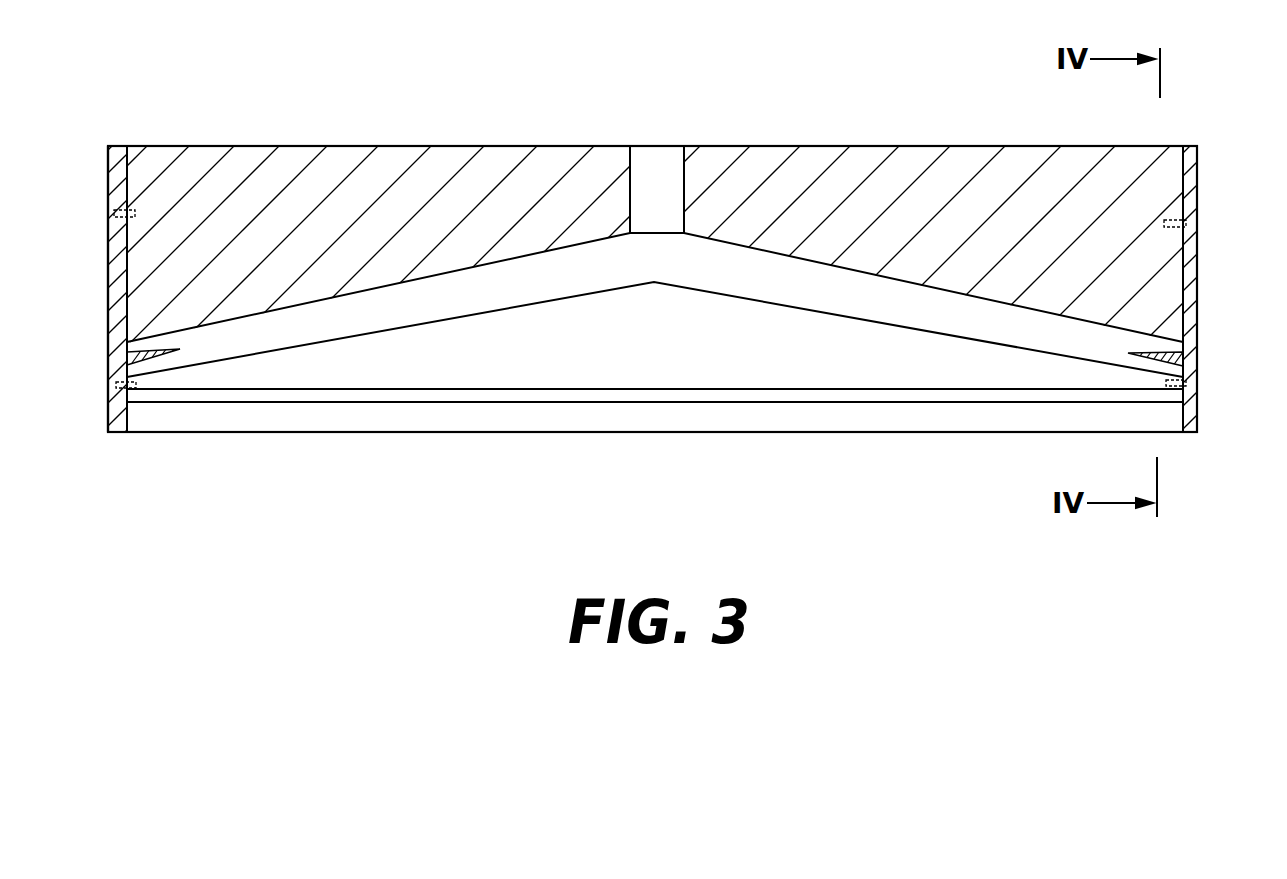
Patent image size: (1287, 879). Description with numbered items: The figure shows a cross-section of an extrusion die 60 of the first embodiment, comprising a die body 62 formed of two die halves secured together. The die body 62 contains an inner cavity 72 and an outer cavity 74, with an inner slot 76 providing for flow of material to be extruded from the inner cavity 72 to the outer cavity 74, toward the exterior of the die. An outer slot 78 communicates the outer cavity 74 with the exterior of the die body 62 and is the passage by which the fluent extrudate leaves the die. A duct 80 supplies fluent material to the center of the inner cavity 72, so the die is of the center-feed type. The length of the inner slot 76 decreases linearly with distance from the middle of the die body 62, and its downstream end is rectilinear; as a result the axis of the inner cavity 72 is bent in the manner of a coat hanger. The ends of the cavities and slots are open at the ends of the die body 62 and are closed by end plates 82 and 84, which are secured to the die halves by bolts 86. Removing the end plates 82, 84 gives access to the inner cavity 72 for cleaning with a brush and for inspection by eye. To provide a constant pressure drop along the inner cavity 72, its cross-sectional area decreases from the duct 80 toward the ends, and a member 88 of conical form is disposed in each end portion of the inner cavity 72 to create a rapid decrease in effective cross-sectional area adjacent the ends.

The die 60 is at (334, 100).
The die body 62 is at (226, 146).
The inner cavity 72 is at (616, 279).
The outer cavity 74 is at (514, 396).
The inner slot 76 is at (666, 349).
The outer slot 78 is at (812, 420).
The duct 80 is at (657, 164).
The end plate 82 is at (108, 409).
The end plate 84 is at (1198, 410).
The bolts 86 is at (108, 224).
The member 88 is at (1222, 332).